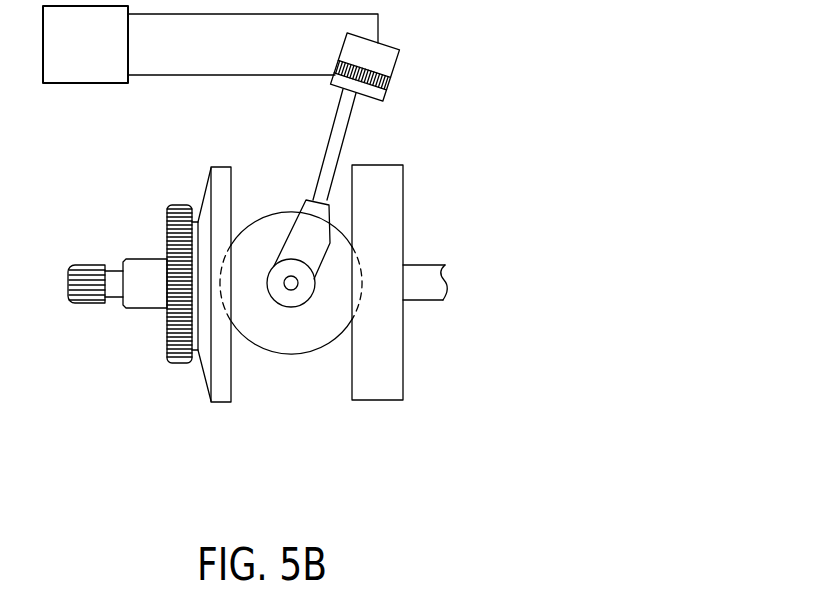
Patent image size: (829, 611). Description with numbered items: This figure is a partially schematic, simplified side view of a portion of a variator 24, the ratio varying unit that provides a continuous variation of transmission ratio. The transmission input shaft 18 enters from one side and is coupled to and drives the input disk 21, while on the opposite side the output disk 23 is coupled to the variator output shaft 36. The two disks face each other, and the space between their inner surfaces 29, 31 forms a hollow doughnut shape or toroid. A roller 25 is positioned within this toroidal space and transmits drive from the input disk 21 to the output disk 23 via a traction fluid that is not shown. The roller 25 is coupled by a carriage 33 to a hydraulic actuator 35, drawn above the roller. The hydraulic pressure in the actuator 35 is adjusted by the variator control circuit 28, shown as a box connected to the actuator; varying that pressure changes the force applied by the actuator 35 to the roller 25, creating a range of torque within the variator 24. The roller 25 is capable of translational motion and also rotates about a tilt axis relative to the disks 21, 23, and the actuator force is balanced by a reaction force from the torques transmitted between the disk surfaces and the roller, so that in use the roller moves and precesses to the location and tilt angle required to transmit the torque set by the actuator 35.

The transmission input shaft 18 is at (137, 313).
The input disk 21 is at (218, 165).
The output disk 23 is at (379, 170).
The variator 24 is at (232, 316).
The roller 25 is at (291, 358).
The variator control circuit 28 is at (102, 58).
The inner surface of the input disk 29 is at (245, 264).
The inner surface of the output disk 31 is at (371, 301).
The carriage 33 is at (305, 207).
The hydraulic actuator 35 is at (416, 100).
The variator output shaft 36 is at (424, 268).